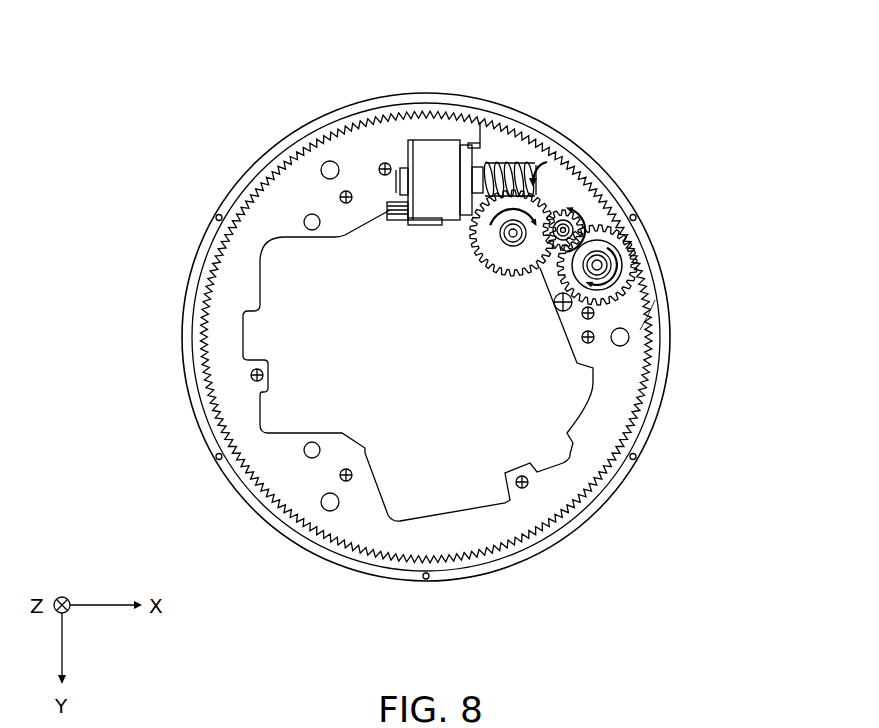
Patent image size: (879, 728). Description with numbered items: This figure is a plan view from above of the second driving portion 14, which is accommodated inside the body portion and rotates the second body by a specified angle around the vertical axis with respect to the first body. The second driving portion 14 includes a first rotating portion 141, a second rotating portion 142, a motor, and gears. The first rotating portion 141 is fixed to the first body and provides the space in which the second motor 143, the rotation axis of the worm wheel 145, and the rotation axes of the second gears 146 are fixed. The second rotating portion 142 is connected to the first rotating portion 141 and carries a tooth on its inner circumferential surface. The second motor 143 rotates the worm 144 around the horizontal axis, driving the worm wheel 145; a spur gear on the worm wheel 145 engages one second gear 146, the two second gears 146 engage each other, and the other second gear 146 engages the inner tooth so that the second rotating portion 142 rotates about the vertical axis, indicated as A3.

The second driving portion 14 is at (441, 19).
The first rotating portion 141 is at (237, 293).
The second rotating portion 142 is at (240, 483).
The second motor 143 is at (435, 147).
The worm 144 is at (533, 157).
The worm wheel 145 is at (543, 232).
The second gear 146 is at (620, 262).
The rotation axis A3 is at (647, 317).